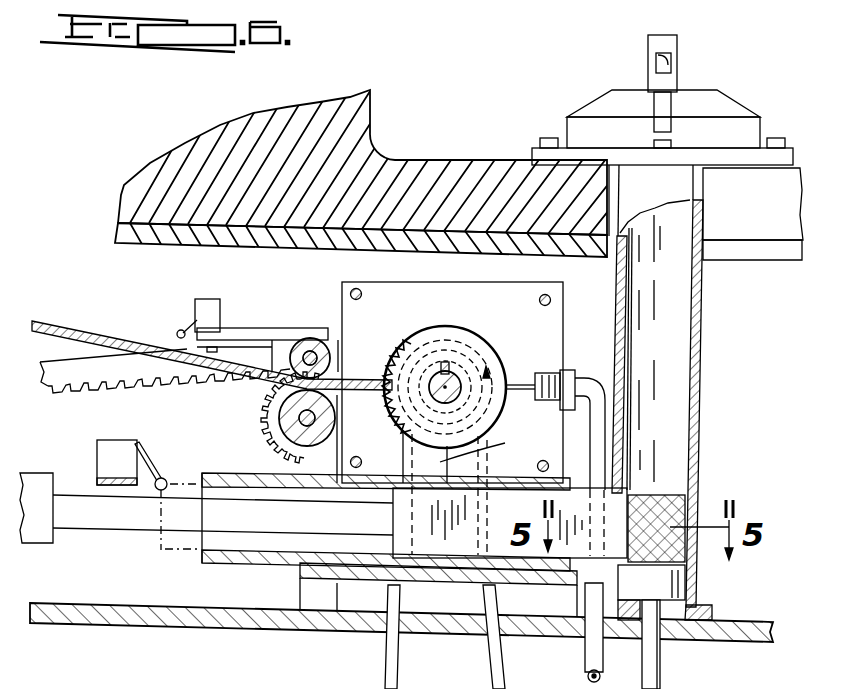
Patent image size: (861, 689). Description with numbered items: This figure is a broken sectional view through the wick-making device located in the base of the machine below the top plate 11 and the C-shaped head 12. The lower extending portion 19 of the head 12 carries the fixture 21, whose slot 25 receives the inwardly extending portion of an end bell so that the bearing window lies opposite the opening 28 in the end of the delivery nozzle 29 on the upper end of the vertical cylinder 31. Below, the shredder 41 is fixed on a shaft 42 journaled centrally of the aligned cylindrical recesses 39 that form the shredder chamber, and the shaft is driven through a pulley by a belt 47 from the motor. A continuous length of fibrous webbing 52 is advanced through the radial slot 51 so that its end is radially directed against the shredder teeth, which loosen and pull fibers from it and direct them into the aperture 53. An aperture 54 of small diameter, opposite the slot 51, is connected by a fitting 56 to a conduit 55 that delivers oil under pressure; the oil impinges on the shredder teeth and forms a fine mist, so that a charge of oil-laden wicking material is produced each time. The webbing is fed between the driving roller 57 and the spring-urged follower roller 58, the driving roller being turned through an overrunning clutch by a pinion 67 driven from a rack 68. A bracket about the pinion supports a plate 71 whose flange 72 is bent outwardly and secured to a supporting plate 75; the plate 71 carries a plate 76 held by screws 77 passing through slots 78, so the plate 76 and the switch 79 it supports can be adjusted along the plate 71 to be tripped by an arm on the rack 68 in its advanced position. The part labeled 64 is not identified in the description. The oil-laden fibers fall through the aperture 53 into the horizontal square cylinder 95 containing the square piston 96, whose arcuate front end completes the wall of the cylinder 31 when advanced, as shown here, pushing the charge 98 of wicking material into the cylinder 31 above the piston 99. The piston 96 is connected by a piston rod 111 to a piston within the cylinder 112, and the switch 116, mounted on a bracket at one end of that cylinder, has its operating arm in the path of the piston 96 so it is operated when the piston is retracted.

The C-shaped head 12 is at (375, 122).
The top plate 11 is at (762, 251).
The lower extending portion 19 is at (786, 180).
The fixture 21 is at (738, 104).
The slot 25 is at (661, 112).
The delivery nozzle 29 is at (670, 44).
The opening 28 is at (675, 63).
The cylinder 31 is at (700, 382).
The conduit 55 is at (590, 391).
The square cylinder 95 is at (627, 468).
The mounting plate 64 is at (338, 340).
The switch 79 is at (220, 272).
The rack 68 is at (72, 374).
The fibrous webbing 52 is at (216, 362).
The pinion 67 is at (268, 438).
The driving roller 57 is at (266, 412).
The follower roller 58 is at (300, 340).
The radial slot 51 is at (357, 378).
The shredder 41 is at (437, 336).
The shaft 42 is at (453, 377).
The cylindrical recesses 39 is at (403, 405).
The aperture 53 is at (447, 456).
The aperture 54 is at (518, 386).
The fitting 56 is at (570, 373).
The switch 116 is at (122, 443).
The cylinder 112 is at (38, 535).
The piston rod 111 is at (120, 520).
The plate 71 is at (386, 581).
The screws 77 is at (350, 619).
The slots 78 is at (372, 626).
The flange 72 is at (415, 633).
The square piston 96 is at (433, 546).
The charge 98 is at (668, 496).
The piston 99 is at (668, 581).
The plate 76 is at (107, 688).
The supporting plate 75 is at (326, 628).
The belt 47 is at (490, 660).